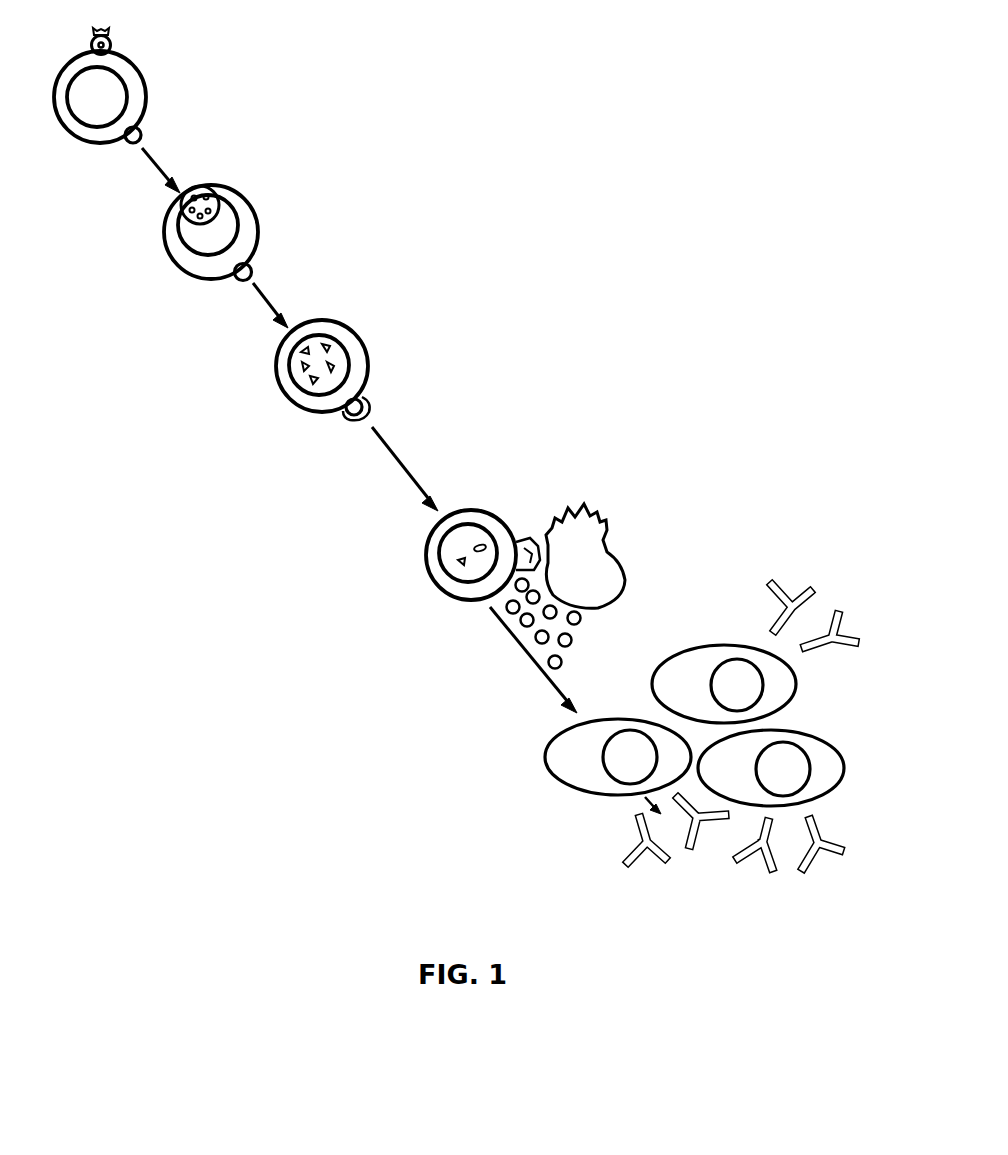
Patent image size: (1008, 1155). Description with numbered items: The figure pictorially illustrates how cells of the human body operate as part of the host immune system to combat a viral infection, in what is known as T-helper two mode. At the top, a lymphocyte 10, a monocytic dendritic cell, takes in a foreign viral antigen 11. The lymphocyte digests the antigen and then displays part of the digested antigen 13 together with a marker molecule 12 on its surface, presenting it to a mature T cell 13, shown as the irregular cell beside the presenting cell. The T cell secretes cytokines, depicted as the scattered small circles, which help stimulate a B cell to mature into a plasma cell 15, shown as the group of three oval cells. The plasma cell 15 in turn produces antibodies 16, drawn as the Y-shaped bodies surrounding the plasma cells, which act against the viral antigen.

The lymphocyte 10 is at (148, 89).
The antigen 11 is at (112, 30).
The marker molecule 12 is at (258, 267).
The digested antigen 13 is at (372, 406).
The plasma cell 15 is at (843, 768).
The antibodies 16 is at (845, 842).